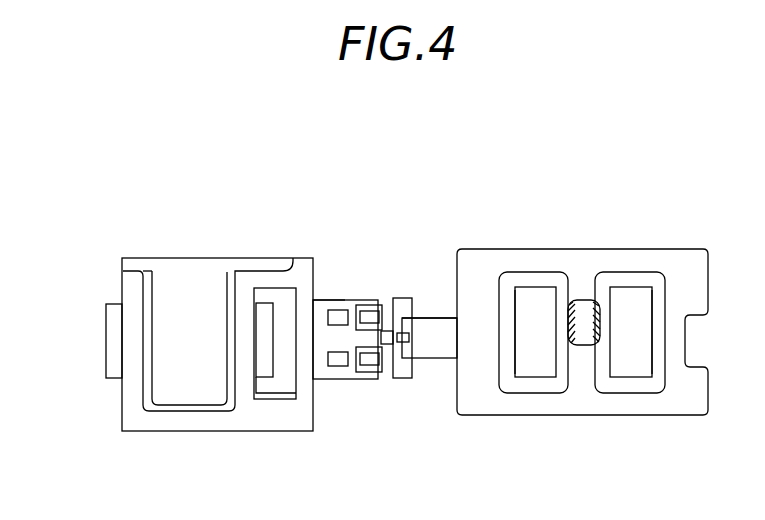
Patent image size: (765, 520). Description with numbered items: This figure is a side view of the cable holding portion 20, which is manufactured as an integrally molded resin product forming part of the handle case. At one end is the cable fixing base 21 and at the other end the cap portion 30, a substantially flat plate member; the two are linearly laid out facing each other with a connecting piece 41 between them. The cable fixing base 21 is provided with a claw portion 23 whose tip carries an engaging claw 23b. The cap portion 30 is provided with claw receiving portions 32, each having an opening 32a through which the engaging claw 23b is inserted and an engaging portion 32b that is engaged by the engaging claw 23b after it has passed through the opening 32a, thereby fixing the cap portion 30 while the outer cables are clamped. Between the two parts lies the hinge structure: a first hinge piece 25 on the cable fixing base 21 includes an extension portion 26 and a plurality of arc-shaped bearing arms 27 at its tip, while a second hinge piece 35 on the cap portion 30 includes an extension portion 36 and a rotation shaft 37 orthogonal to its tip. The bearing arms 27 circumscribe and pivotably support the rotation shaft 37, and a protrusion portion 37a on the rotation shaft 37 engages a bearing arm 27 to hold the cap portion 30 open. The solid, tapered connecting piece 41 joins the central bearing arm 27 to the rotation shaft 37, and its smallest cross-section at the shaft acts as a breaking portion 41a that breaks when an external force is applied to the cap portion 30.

The cable holding portion 20 is at (403, 232).
The cable fixing base 21 is at (193, 283).
The claw portion 23 is at (174, 298).
The engaging claw 23b is at (87, 348).
The first hinge piece 25 is at (362, 278).
The extension portion 26 is at (328, 299).
The bearing arms 27 is at (378, 320).
The cap portion 30 is at (623, 248).
The claw receiving portions 32 is at (550, 270).
The opening 32a is at (535, 365).
The engaging portion 32b is at (518, 323).
The second hinge piece 35 is at (413, 385).
The extension portion 36 is at (440, 347).
The rotation shaft 37 is at (402, 379).
The protrusion portion 37a is at (415, 317).
The connecting piece 41 is at (387, 346).
The breaking portion 41a is at (406, 333).